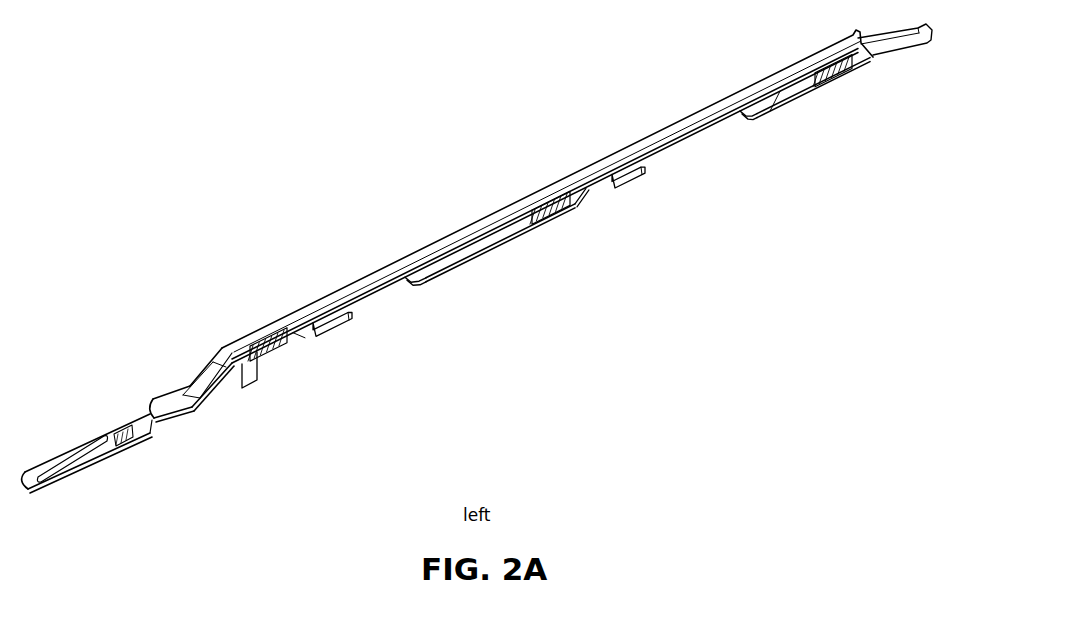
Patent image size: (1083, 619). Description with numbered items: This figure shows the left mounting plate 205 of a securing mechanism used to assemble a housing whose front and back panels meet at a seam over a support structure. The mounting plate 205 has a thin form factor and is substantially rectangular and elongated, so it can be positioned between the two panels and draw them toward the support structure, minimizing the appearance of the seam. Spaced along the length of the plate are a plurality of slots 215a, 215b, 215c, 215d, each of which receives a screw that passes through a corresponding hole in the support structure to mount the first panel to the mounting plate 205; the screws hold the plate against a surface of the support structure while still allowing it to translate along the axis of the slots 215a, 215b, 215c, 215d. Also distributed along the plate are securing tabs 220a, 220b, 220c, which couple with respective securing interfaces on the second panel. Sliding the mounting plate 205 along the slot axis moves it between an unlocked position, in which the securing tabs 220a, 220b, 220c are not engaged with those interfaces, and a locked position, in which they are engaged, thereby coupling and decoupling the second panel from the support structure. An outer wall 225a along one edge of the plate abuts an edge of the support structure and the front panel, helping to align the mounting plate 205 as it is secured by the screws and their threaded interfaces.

The left mounting plate 205 is at (511, 115).
The slot 215a is at (140, 431).
The slot 215b is at (267, 350).
The slot 215c is at (542, 213).
The slot 215d is at (830, 72).
The securing tab 220a is at (332, 325).
The securing tab 220b is at (617, 183).
The securing tab 220c is at (890, 43).
The outer wall 225a is at (420, 258).